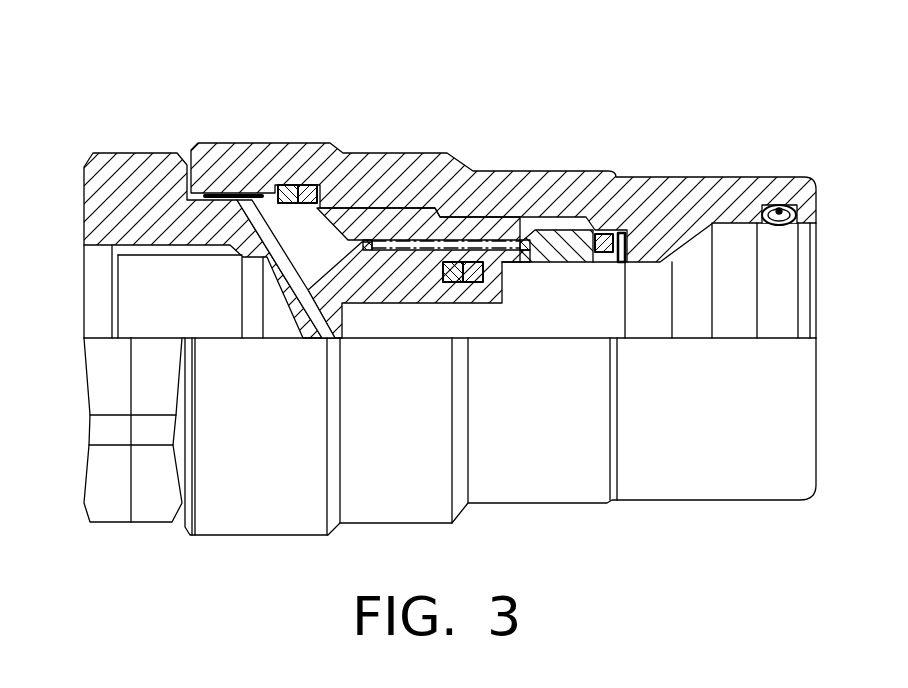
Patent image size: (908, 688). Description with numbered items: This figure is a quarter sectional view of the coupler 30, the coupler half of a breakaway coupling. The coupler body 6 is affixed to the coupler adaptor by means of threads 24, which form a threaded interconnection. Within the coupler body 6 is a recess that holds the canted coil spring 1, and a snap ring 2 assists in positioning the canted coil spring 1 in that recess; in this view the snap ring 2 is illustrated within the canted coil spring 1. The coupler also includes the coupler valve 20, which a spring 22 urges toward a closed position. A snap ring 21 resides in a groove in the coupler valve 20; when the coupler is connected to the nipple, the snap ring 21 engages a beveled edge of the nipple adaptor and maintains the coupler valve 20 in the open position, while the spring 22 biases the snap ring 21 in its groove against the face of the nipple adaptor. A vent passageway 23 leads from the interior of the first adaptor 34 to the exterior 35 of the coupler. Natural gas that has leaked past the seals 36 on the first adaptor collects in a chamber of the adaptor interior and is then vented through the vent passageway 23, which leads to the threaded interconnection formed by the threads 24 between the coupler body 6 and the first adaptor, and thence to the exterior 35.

The canted coil spring 1 is at (760, 205).
The snap ring 2 is at (800, 200).
The coupler body 6 is at (355, 178).
The coupler valve 20 is at (580, 222).
The snap ring 21 is at (567, 262).
The spring 22 is at (407, 245).
The vent passageway 23 is at (243, 213).
The threads 24 is at (210, 197).
The coupler 30 is at (537, 152).
The interior of the first adaptor 34 is at (337, 340).
The exterior 35 is at (110, 152).
The seals 36 is at (457, 282).